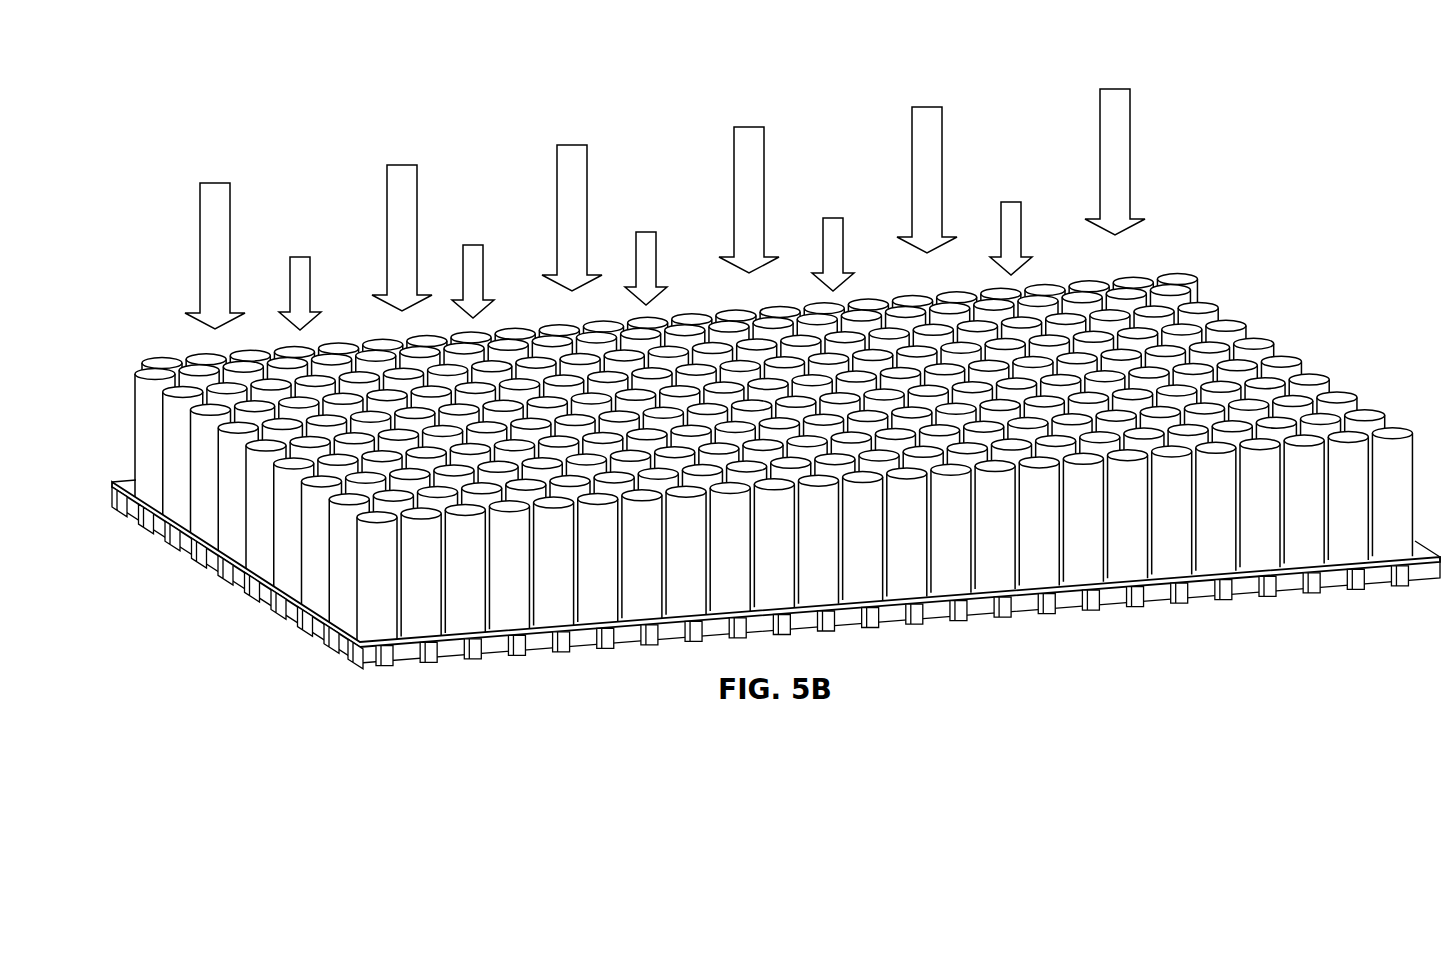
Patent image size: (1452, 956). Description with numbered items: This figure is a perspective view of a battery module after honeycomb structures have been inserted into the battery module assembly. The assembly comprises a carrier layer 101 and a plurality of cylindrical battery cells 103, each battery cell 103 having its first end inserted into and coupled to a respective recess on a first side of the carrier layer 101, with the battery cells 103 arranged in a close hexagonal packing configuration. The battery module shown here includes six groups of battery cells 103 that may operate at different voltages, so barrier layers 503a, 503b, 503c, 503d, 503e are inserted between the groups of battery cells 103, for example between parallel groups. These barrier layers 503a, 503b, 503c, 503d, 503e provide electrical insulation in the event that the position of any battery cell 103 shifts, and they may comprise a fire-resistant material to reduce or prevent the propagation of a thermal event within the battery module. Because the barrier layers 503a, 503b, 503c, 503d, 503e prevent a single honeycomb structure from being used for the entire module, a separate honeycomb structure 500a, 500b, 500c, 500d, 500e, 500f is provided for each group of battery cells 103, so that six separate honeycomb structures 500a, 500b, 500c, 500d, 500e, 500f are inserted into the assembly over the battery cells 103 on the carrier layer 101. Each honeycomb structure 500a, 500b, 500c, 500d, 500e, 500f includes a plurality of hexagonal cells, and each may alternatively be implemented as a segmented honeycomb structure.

The honeycomb structure 500a is at (215, 183).
The honeycomb structure 500b is at (402, 165).
The honeycomb structure 500c is at (572, 145).
The honeycomb structure 500d is at (748, 127).
The honeycomb structure 500e is at (927, 107).
The honeycomb structure 500f is at (1115, 89).
The barrier layer 503a is at (297, 257).
The barrier layer 503b is at (470, 245).
The barrier layer 503c is at (645, 232).
The barrier layer 503d is at (832, 218).
The barrier layer 503e is at (1010, 202).
The battery cell 103 is at (366, 595).
The carrier layer 101 is at (372, 654).